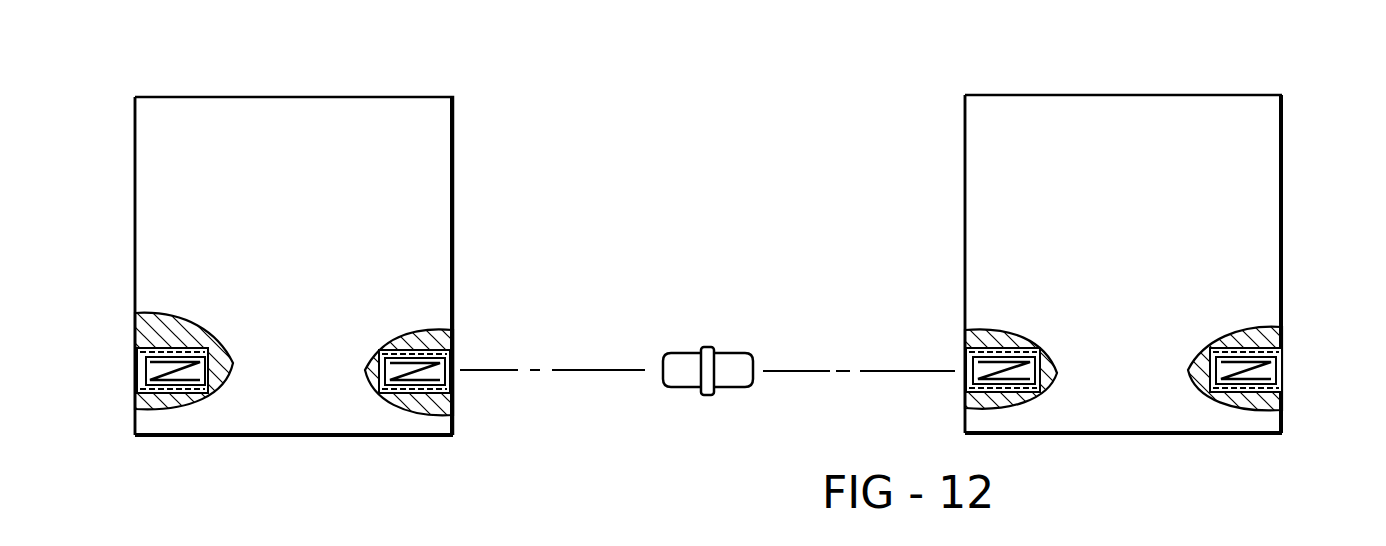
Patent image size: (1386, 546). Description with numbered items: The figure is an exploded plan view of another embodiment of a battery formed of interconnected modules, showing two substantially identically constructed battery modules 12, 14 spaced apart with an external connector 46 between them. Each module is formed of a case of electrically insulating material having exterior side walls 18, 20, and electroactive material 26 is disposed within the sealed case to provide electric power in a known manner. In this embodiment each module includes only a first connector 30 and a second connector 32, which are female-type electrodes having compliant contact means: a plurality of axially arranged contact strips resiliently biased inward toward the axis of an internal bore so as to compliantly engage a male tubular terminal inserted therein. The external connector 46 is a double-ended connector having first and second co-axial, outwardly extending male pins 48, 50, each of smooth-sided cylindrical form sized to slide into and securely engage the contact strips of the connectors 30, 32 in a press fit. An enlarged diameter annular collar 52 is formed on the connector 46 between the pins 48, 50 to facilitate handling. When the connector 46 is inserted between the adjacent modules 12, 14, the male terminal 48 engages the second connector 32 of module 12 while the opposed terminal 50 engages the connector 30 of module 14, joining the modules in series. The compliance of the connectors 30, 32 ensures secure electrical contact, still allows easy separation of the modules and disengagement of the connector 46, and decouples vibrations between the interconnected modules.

The battery module 12 is at (300, 80).
The battery module 14 is at (1141, 77).
The side wall 18 is at (137, 175).
The side wall 20 is at (455, 227).
The electroactive material 26 is at (138, 327).
The first connector 30 is at (134, 364).
The second connector 32 is at (455, 353).
The external connector 46 is at (720, 338).
The male pin 48 is at (665, 374).
The male pin 50 is at (745, 380).
The annular collar 52 is at (707, 396).